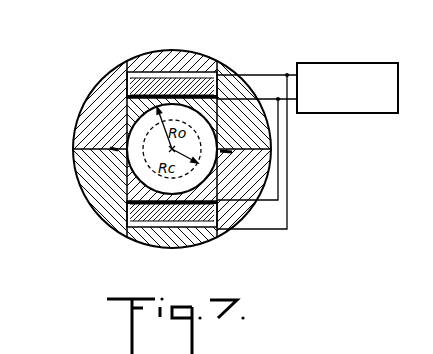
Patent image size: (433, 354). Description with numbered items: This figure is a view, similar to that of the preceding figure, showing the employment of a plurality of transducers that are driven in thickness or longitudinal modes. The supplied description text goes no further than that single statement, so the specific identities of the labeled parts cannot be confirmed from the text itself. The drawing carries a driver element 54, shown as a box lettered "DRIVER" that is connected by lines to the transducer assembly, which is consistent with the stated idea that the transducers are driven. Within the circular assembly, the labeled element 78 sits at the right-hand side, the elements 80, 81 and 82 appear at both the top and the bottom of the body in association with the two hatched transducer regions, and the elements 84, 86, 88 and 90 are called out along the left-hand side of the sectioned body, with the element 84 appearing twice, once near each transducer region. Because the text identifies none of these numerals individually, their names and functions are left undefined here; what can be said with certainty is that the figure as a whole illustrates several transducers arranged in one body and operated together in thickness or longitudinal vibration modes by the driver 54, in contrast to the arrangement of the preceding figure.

The driver 54 is at (367, 62).
The right pole piece 78 is at (224, 152).
The coil housing 80 is at (135, 72).
The coil 81 is at (160, 78).
The bobbin 82 is at (196, 77).
The inner pole pieces 84 is at (130, 108).
The upper yoke 86 is at (90, 133).
The outer shell 88 is at (88, 111).
The lower yoke 90 is at (90, 167).